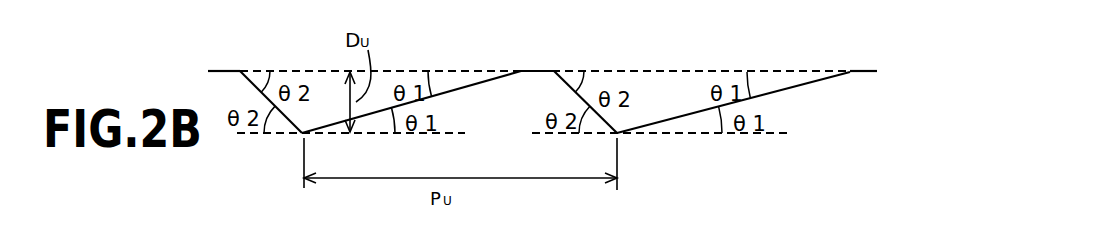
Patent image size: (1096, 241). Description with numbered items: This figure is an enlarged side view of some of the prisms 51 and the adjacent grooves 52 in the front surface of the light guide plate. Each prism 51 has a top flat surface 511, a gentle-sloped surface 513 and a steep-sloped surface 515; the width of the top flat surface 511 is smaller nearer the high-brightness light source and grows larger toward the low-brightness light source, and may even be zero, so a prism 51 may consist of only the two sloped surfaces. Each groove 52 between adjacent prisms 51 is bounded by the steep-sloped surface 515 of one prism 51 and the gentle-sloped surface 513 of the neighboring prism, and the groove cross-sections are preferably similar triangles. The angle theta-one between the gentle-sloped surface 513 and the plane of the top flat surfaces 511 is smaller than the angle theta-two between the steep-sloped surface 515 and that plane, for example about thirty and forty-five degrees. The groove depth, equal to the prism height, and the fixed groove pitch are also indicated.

The prism 51 is at (483, 112).
The top flat surface 511 is at (213, 70).
The gentle-sloped surface 513 is at (467, 72).
The steep-sloped surface 515 is at (255, 71).
The groove 52 is at (331, 77).